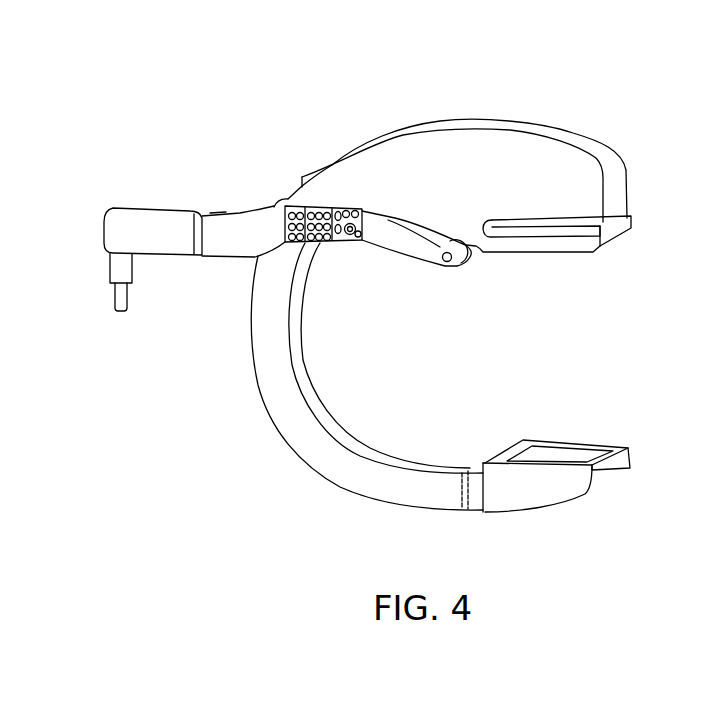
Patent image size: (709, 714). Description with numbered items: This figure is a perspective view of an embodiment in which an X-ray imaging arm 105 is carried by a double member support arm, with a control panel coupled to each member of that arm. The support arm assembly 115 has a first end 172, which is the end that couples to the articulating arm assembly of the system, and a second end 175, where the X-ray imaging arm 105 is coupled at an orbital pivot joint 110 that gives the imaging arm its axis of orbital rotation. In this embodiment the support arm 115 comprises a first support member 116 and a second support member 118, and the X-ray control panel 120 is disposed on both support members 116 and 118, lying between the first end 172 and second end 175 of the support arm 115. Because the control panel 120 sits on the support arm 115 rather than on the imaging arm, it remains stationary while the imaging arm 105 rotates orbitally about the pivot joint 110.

The X-ray imaging arm 105 is at (469, 146).
The orbital pivot joint 110 is at (454, 264).
The support arm assembly 115 is at (205, 261).
The first support member 116 is at (244, 247).
The second support member 118 is at (244, 208).
The X-ray control panel 120 is at (287, 204).
The first end 172 is at (218, 210).
The second end 175 is at (428, 253).